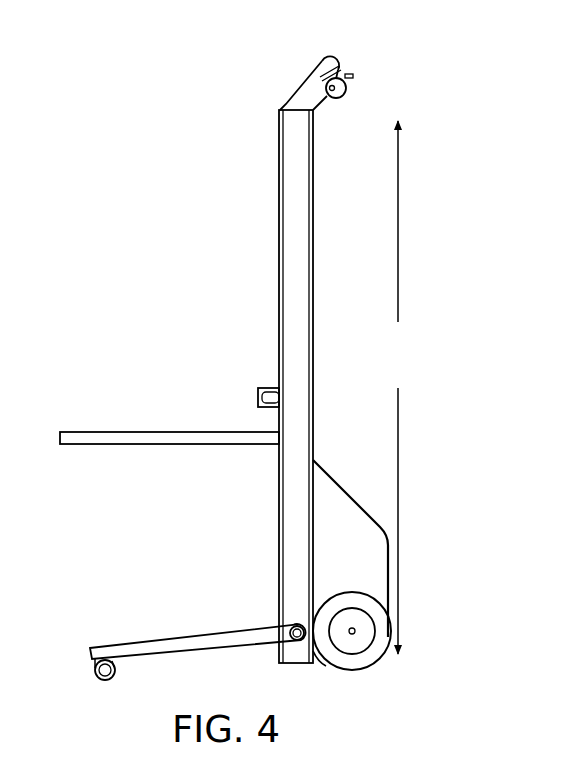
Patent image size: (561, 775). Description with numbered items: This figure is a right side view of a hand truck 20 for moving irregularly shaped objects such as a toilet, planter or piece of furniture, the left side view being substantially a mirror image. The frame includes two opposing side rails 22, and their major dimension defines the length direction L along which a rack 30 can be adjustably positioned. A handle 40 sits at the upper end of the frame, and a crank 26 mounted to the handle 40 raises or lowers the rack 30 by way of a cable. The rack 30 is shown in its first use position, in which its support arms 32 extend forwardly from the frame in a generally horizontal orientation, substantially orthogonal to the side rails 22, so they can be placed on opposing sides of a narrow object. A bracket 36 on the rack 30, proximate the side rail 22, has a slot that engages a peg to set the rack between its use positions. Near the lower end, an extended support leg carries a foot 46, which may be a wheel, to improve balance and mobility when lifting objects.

The hand truck 20 is at (114, 124).
The side rails 22 is at (270, 277).
The crank 26 is at (371, 80).
The handle 40 is at (336, 57).
The rack 30 is at (97, 353).
The support arms 32 is at (93, 432).
The bracket 36 is at (267, 388).
The feet 46 is at (95, 661).